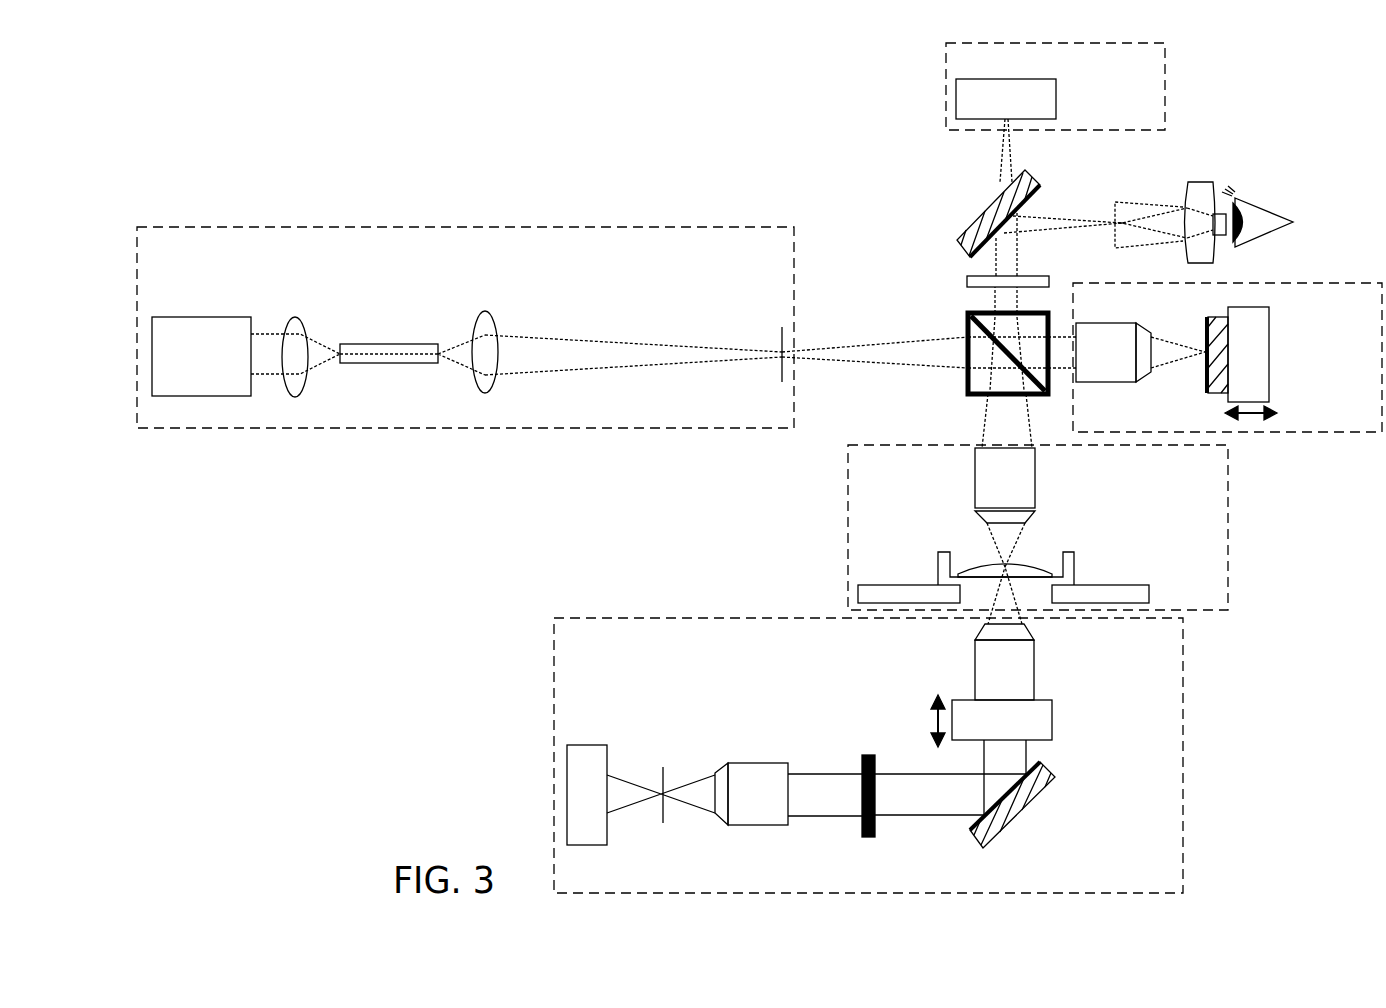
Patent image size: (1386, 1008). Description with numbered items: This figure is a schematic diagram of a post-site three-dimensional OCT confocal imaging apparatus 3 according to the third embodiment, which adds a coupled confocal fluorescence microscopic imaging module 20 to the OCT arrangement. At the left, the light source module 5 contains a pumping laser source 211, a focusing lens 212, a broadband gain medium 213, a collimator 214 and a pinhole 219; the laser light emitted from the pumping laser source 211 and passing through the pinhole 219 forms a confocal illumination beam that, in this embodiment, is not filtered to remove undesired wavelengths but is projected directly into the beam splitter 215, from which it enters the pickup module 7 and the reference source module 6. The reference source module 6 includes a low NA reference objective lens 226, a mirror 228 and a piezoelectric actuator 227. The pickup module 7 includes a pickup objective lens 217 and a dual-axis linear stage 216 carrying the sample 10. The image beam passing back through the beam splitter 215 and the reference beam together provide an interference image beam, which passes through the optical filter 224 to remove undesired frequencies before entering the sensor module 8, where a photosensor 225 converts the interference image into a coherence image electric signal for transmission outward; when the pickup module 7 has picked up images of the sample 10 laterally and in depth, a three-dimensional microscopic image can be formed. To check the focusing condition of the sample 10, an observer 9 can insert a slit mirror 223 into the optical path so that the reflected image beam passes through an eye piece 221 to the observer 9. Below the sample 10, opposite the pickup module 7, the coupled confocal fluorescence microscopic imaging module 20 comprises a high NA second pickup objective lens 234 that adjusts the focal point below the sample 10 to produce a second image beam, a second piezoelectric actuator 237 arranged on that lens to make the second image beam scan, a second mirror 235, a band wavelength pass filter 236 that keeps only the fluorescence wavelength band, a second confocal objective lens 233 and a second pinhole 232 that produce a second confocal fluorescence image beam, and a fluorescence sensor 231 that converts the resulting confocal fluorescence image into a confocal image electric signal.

The 3D OCT confocal imaging apparatus 3 is at (716, 170).
The light source module 5 is at (270, 227).
The pumping laser source 211 is at (205, 317).
The focusing lens 212 is at (300, 318).
The broadband gain medium 213 is at (358, 344).
The collimator 214 is at (492, 312).
The pinhole 219 is at (785, 330).
The beam splitter 215 is at (968, 375).
The sensor module 8 is at (1165, 95).
The photosensor 225 is at (1057, 95).
The slit mirror 223 is at (1030, 175).
The optical filter 224 is at (1022, 276).
The eye piece 221 is at (1205, 183).
The observer 9 is at (1280, 210).
The reference source module 6 is at (1265, 432).
The reference objective lens 226 is at (1090, 382).
The mirror 228 is at (1210, 318).
The piezoelectric actuator 227 is at (1270, 355).
The pickup module 7 is at (1228, 527).
The pickup objective lens 217 is at (975, 478).
The sample 10 is at (1030, 563).
The dual-axis linear stage 216 is at (1115, 585).
The coupled confocal fluorescence microscopic imaging module 20 is at (1183, 755).
The second pickup objective lens 234 is at (1034, 680).
The second piezoelectric actuator 237 is at (1052, 722).
The second mirror 235 is at (1045, 770).
The band wavelength pass filter 236 is at (870, 837).
The second confocal objective lens 233 is at (755, 763).
The second pinhole 232 is at (665, 775).
The fluorescence sensor 231 is at (590, 745).